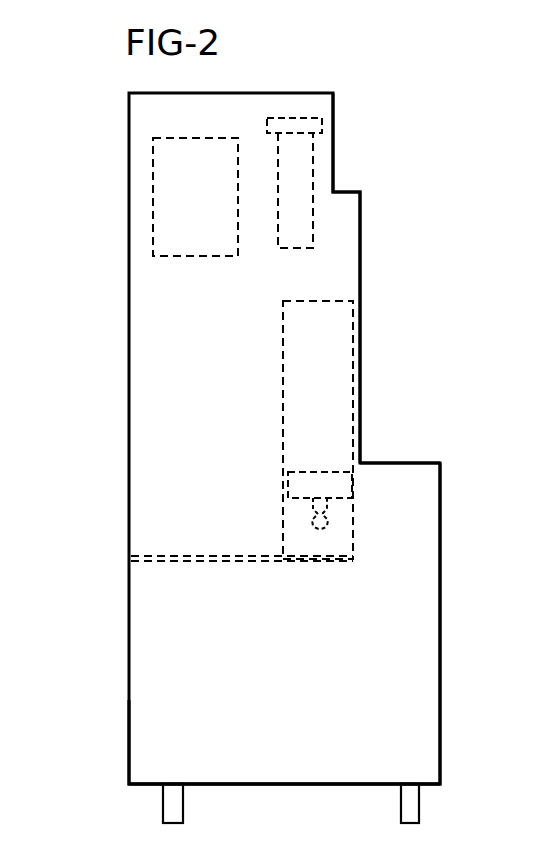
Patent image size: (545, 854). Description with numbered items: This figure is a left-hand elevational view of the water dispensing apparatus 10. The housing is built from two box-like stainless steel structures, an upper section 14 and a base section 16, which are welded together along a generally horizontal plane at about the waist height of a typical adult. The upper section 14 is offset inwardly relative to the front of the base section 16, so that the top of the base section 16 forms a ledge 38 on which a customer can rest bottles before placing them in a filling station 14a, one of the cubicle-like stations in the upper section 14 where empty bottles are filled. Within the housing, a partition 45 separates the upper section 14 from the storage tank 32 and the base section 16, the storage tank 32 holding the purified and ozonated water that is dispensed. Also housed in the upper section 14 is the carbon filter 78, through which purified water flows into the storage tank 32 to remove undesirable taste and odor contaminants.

The water dispensing apparatus 10 is at (122, 161).
The upper section 14 is at (368, 235).
The filling station 14a is at (341, 400).
The base section 16 is at (412, 596).
The storage tank 32 is at (121, 716).
The ledge 38 is at (410, 463).
The partition 45 is at (176, 557).
The carbon filter 78 is at (312, 182).